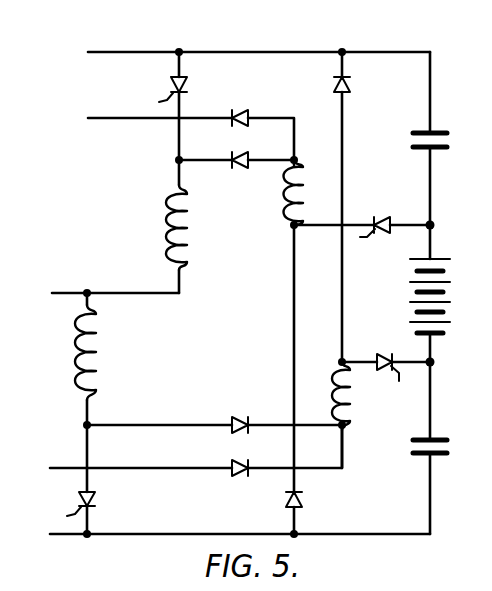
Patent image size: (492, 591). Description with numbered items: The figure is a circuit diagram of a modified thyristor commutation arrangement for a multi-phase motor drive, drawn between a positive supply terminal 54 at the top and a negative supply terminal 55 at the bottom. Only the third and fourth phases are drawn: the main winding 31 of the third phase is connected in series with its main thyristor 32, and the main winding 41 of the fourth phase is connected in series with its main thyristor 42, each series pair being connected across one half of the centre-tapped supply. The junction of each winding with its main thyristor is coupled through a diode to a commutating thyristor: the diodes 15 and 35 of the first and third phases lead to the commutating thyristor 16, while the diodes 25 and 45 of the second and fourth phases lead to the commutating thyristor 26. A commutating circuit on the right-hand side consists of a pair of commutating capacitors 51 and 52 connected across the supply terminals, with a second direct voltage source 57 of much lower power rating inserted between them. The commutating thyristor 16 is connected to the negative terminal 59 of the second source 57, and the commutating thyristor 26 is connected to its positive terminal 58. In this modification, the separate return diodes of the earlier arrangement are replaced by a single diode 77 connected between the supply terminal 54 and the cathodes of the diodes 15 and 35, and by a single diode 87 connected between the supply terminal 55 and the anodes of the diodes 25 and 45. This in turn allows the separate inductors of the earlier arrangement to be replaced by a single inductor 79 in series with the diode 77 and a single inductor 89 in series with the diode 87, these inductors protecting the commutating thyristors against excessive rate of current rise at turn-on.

The positive terminal 54 is at (162, 50).
The negative terminal 55 is at (125, 536).
The main thyristor 42 is at (190, 82).
The main thyristor 32 is at (97, 499).
The diode 25 is at (247, 112).
The diode 45 is at (243, 168).
The diode 35 is at (238, 415).
The diode 15 is at (240, 478).
The diode 77 is at (333, 80).
The diode 87 is at (303, 502).
The commutating thyristor 26 is at (380, 217).
The commutating thyristor 16 is at (385, 352).
The main winding 41 is at (170, 212).
The main winding 31 is at (80, 352).
The inductor 89 is at (297, 170).
The inductor 79 is at (338, 382).
The commutating capacitor 51 is at (422, 127).
The commutating capacitor 52 is at (421, 456).
The second direct voltage source 57 is at (413, 292).
The positive terminal 58 is at (436, 222).
The negative terminal 59 is at (436, 362).